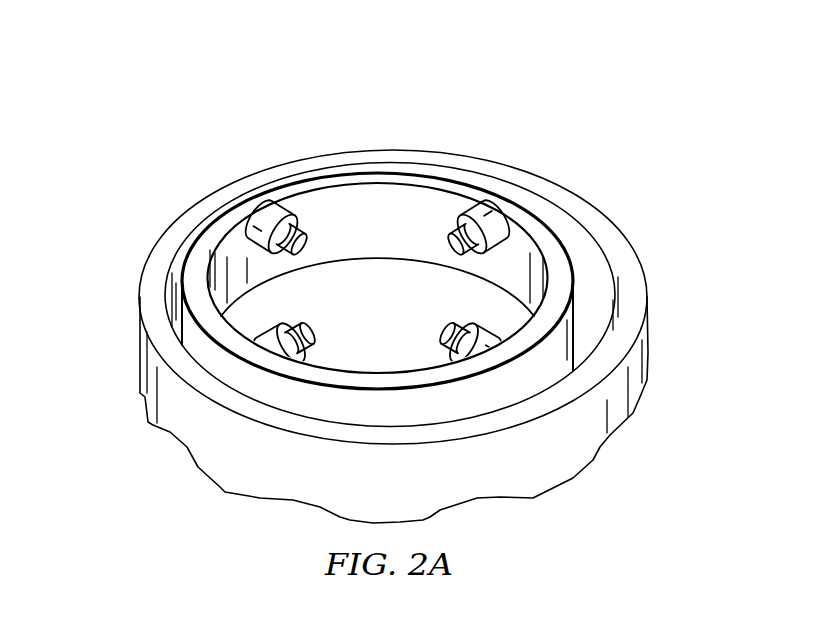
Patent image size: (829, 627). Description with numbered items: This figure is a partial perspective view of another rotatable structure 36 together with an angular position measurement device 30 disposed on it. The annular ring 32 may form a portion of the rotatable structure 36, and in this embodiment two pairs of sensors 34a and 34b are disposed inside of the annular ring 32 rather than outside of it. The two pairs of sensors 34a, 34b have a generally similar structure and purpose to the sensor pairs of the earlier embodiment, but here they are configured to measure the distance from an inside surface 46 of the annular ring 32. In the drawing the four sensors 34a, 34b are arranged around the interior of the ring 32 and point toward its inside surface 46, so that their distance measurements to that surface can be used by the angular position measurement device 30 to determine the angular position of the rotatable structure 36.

The angular position measurement device 30 is at (283, 136).
The annular ring 32 is at (556, 193).
The pair of sensors 34a is at (281, 207).
The pair of sensors 34b is at (474, 207).
The rotatable structure 36 is at (120, 309).
The inside surface 46 is at (601, 268).